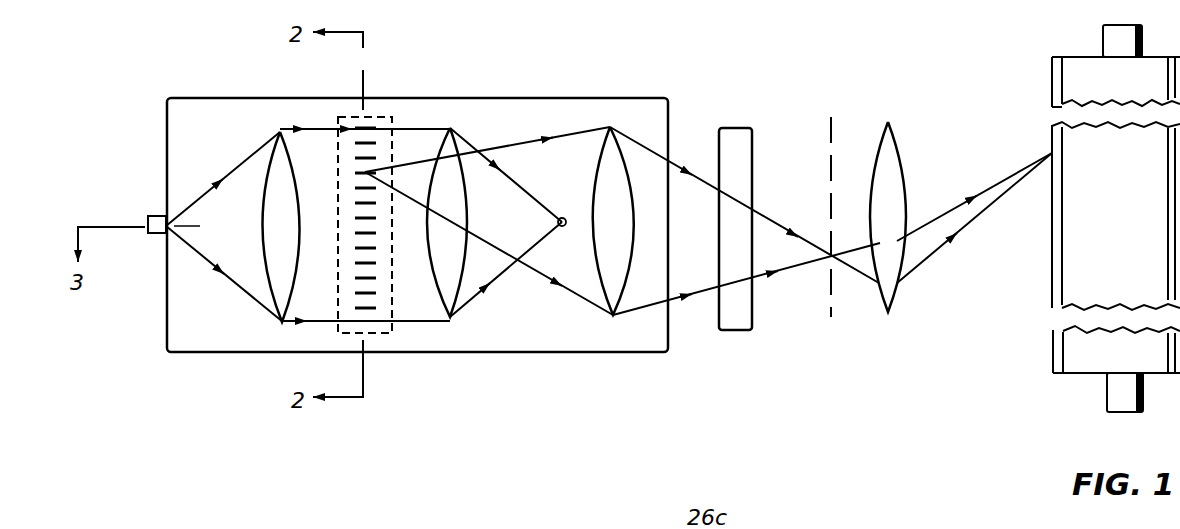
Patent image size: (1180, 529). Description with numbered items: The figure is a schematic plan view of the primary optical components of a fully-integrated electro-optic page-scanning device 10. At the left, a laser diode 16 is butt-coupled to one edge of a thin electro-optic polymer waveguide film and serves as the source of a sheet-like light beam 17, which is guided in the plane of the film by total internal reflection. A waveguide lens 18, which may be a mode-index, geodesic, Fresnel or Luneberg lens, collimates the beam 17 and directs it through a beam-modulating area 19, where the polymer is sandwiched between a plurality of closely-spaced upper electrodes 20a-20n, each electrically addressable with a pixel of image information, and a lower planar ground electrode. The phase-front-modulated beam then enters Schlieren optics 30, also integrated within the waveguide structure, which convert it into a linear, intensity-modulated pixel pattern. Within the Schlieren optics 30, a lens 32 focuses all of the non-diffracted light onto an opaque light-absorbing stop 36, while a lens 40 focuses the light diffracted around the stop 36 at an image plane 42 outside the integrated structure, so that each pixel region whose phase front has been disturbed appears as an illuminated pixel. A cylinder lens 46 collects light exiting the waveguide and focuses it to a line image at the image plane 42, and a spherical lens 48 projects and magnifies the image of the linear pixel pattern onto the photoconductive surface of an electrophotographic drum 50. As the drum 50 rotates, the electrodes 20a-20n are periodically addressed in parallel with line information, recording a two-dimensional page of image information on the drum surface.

The fully-integrated electro-optic page-scanning device 10 is at (150, 153).
The laser diode 16 is at (157, 234).
The sheet-like light beam 17 is at (292, 322).
The waveguide lens 18 is at (270, 136).
The beam-modulating area 19 is at (385, 198).
The upper electrode 20a is at (370, 127).
The upper electrode 20n is at (370, 329).
The Schlieren optics 30 is at (516, 217).
The lens 32 is at (448, 293).
The opaque light-absorbing stop 36 is at (563, 217).
The lens 40 is at (612, 297).
The image plane 42 is at (831, 120).
The cylinder lens 46 is at (737, 127).
The spherical lens 48 is at (890, 293).
The electrophotographic drum 50 is at (1053, 297).